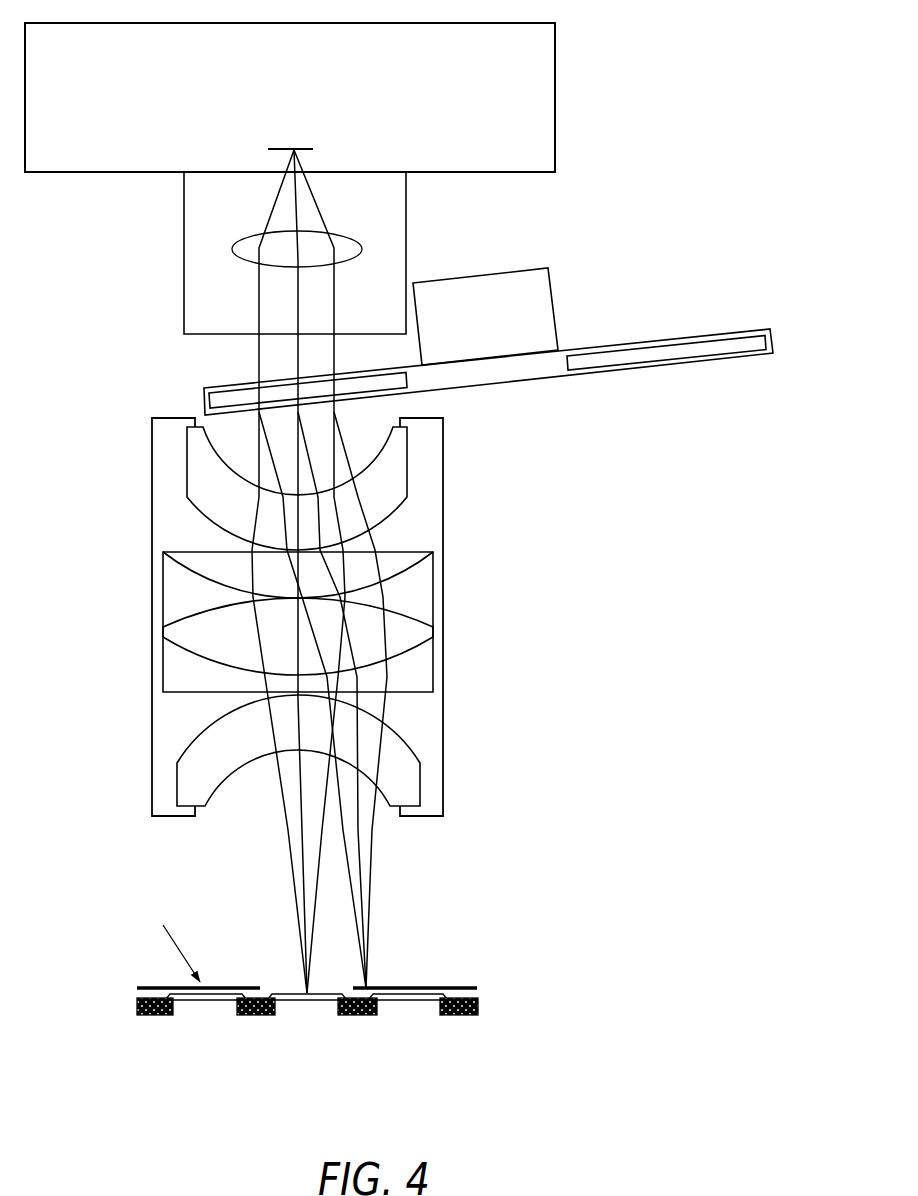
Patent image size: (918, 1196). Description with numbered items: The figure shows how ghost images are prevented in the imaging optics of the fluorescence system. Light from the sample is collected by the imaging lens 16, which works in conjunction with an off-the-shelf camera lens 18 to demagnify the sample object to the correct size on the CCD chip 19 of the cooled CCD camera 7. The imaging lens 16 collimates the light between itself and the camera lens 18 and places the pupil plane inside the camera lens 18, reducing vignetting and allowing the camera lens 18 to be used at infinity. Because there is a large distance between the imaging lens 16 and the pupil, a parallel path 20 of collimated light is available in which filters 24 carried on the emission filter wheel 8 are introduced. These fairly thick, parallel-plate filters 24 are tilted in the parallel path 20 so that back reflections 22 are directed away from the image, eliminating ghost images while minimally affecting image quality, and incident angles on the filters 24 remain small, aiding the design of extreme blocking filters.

The CCD camera 7 is at (503, 106).
The emission filter wheel 8 is at (586, 324).
The imaging lens 16 is at (147, 598).
The camera lens 18 is at (176, 242).
The CCD chip 19 is at (282, 141).
The parallel path region 20 is at (451, 372).
The back reflections 22 is at (367, 981).
The filters 24 is at (243, 396).